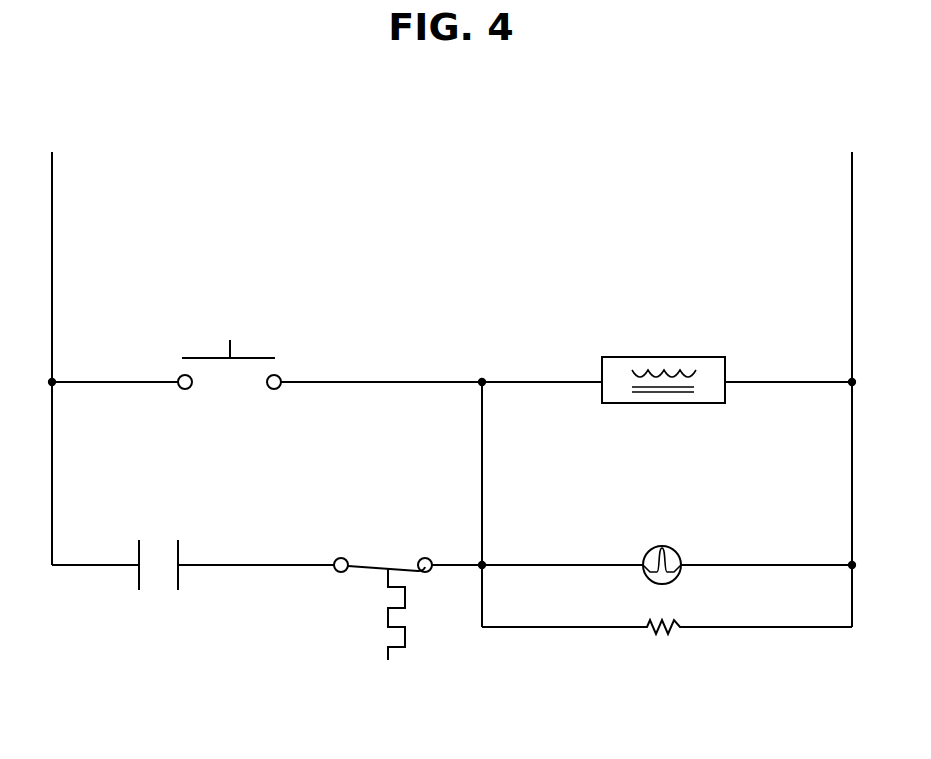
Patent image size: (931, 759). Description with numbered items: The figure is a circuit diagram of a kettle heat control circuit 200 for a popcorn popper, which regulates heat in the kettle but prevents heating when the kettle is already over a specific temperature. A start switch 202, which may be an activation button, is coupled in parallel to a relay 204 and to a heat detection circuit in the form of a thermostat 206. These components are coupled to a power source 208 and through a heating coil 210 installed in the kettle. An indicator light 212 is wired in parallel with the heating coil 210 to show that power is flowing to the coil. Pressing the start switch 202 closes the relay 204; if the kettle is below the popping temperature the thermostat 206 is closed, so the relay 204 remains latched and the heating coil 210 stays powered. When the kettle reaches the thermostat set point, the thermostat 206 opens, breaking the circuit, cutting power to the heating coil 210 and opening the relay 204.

The kettle heat control circuit 200 is at (404, 173).
The start switch 202 is at (264, 355).
The relay 204 is at (180, 578).
The thermostat 206 is at (364, 568).
The power source 208 is at (52, 252).
The heating coil 210 is at (710, 356).
The indicator light 212 is at (663, 546).